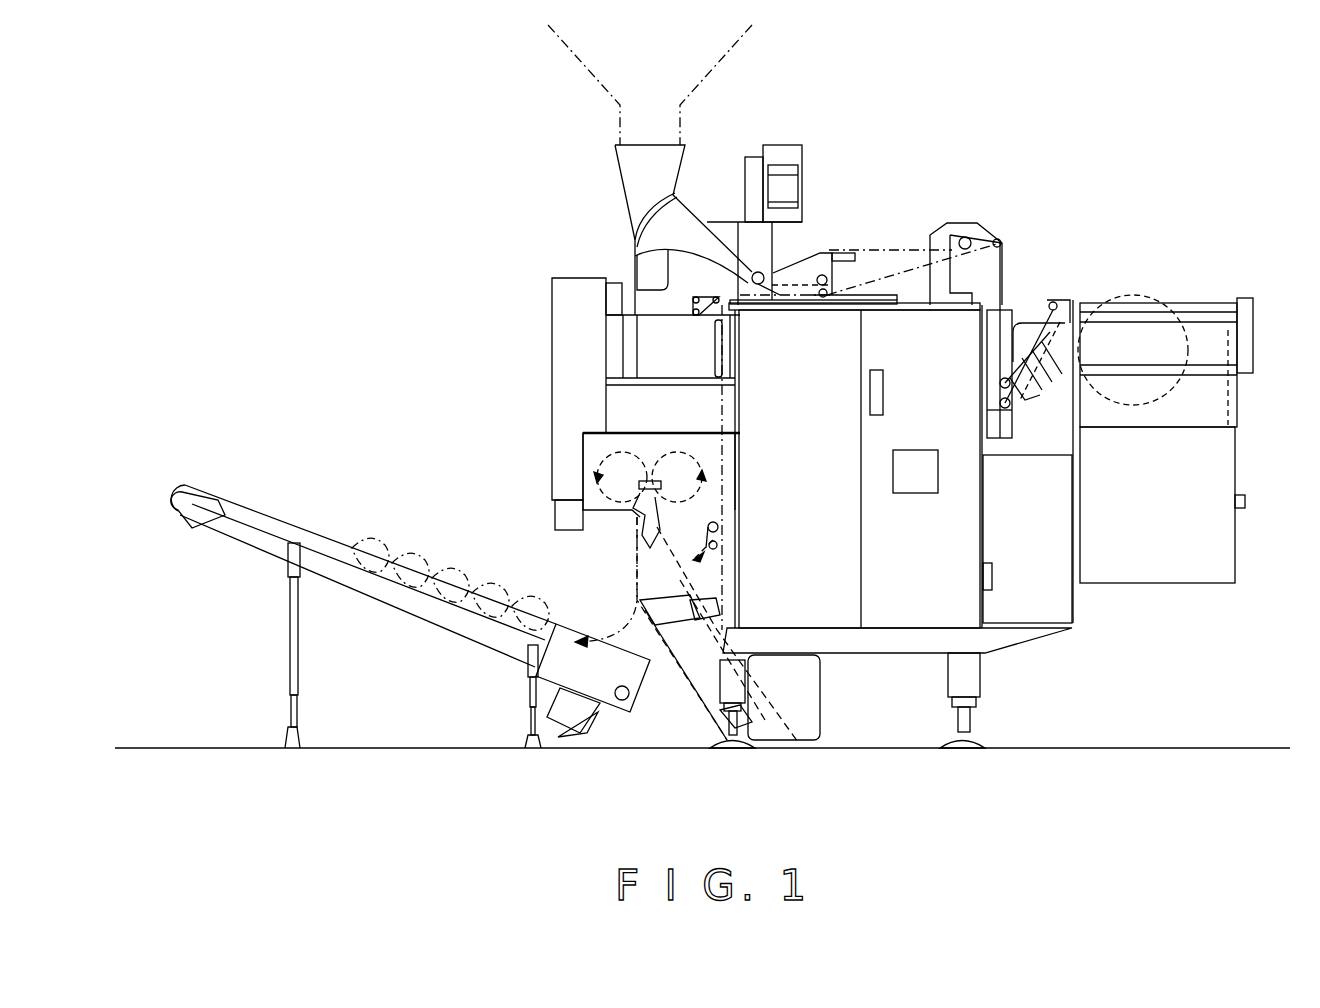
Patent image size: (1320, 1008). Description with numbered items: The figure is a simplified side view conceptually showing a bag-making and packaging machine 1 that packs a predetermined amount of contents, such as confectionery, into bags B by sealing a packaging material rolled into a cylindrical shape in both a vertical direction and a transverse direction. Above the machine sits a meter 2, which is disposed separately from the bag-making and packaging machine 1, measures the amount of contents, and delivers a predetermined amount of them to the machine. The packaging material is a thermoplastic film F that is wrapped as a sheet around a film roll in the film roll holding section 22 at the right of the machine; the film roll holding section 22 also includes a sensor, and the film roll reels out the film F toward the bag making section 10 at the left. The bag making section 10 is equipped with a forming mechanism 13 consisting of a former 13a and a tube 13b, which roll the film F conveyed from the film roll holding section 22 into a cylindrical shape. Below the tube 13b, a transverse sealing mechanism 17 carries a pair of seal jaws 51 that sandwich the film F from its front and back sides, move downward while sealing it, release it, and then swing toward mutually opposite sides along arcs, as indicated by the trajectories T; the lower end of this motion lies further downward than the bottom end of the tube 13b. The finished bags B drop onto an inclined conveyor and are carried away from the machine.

The bag-making and packaging machine 1 is at (893, 170).
The meter 2 is at (584, 62).
The bag making section 10 is at (460, 492).
The forming mechanism 13 is at (527, 205).
The former 13a is at (633, 250).
The tube 13b is at (640, 305).
The transverse sealing mechanism 17 is at (585, 483).
The seal jaw 51 is at (583, 452).
The trajectory T is at (645, 450).
The film F is at (883, 250).
The bag B is at (632, 540).
The film roll holding section 22 is at (1178, 585).